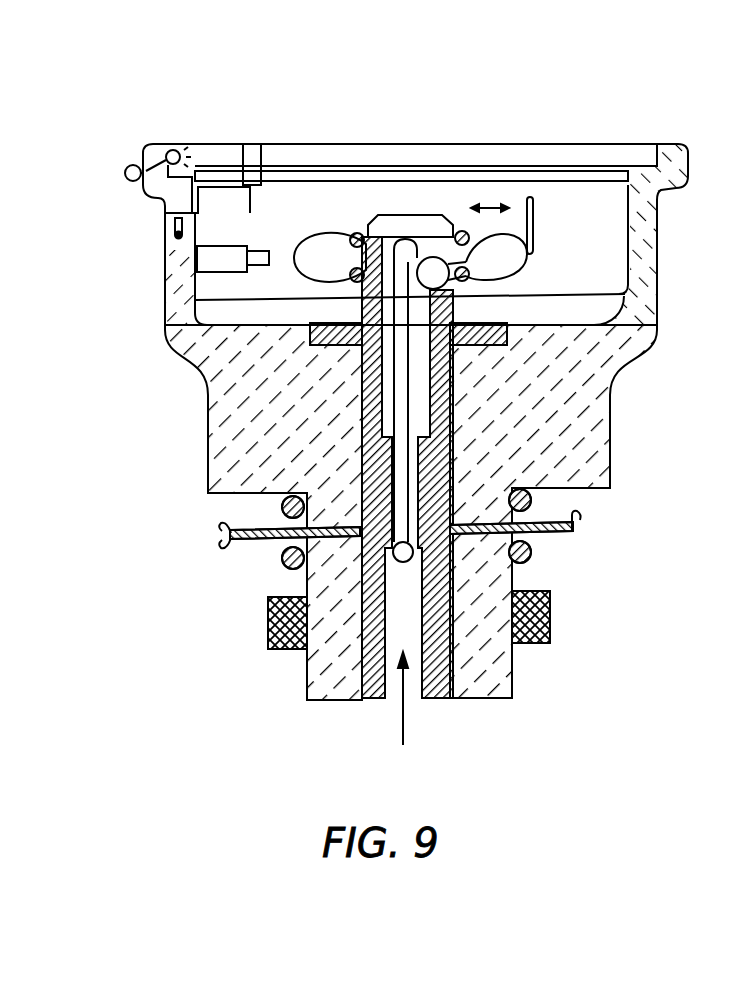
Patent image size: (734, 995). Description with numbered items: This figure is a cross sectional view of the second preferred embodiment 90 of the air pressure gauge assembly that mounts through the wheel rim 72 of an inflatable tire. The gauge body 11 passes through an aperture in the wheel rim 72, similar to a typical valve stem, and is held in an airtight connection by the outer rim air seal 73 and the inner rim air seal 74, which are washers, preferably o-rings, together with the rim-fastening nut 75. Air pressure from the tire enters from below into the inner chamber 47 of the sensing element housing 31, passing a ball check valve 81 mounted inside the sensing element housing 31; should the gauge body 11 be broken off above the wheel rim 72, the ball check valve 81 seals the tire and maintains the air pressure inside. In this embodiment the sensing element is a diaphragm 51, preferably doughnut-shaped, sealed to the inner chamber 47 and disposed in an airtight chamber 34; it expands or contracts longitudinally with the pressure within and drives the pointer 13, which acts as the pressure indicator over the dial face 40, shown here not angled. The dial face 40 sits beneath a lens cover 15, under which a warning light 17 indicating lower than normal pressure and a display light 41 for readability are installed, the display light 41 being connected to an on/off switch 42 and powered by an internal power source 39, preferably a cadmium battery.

The gauge body 11 is at (608, 430).
The pointer 13 is at (197, 265).
The lens cover 15 is at (432, 147).
The warning light 17 is at (263, 147).
The sensing element housing 31 is at (216, 478).
The airtight chamber 34 is at (282, 277).
The internal power source 39 is at (165, 213).
The dial face 40 is at (508, 171).
The display light 41 is at (170, 150).
The on/off switch 42 is at (125, 170).
The inner chamber 47 is at (409, 405).
The diaphragm 51 is at (313, 273).
The wheel rim 72 is at (247, 540).
The outer rim air seal 73 is at (533, 498).
The inner rim air seal 74 is at (534, 557).
The rim-fastening nut 75 is at (550, 641).
The ball check valve 81 is at (268, 624).
The second preferred embodiment 90 is at (246, 709).